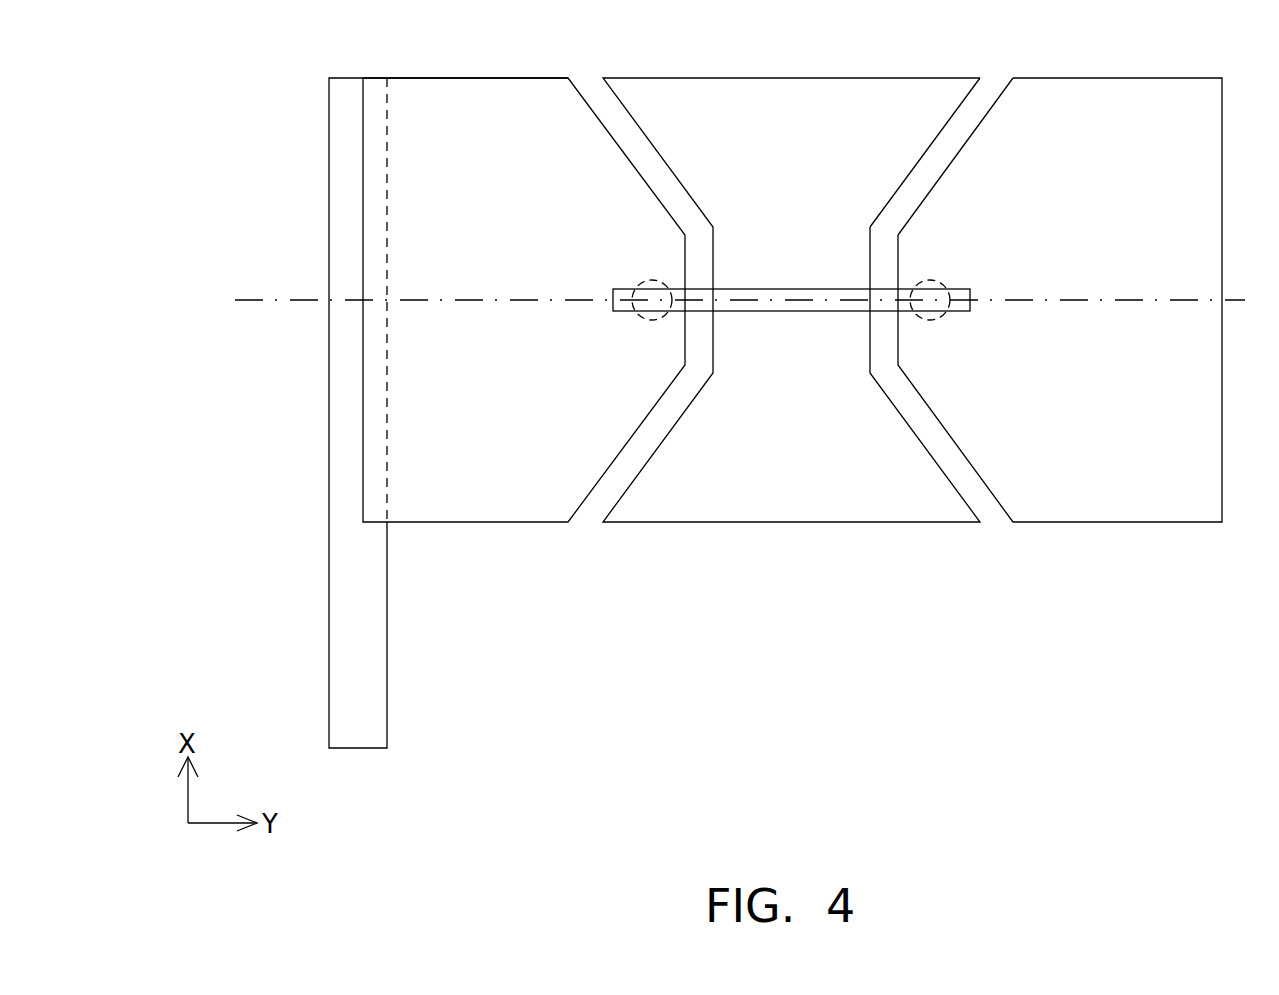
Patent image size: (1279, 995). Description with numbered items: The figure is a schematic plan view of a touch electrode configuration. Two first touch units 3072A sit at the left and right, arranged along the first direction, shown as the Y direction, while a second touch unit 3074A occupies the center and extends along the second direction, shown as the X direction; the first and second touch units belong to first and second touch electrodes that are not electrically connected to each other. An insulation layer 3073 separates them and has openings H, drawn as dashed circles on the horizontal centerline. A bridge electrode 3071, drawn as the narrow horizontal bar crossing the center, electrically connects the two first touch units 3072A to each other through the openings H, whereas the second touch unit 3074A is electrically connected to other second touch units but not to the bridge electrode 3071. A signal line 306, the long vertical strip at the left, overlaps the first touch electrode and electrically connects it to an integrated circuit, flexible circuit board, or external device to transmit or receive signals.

The signal line 306 is at (360, 653).
The first touch units 3072A is at (482, 113).
The second touch units 3074A is at (785, 113).
The insulation layer 3073 is at (985, 95).
The bridge electrode 3071 is at (787, 312).
The opening H is at (656, 282).